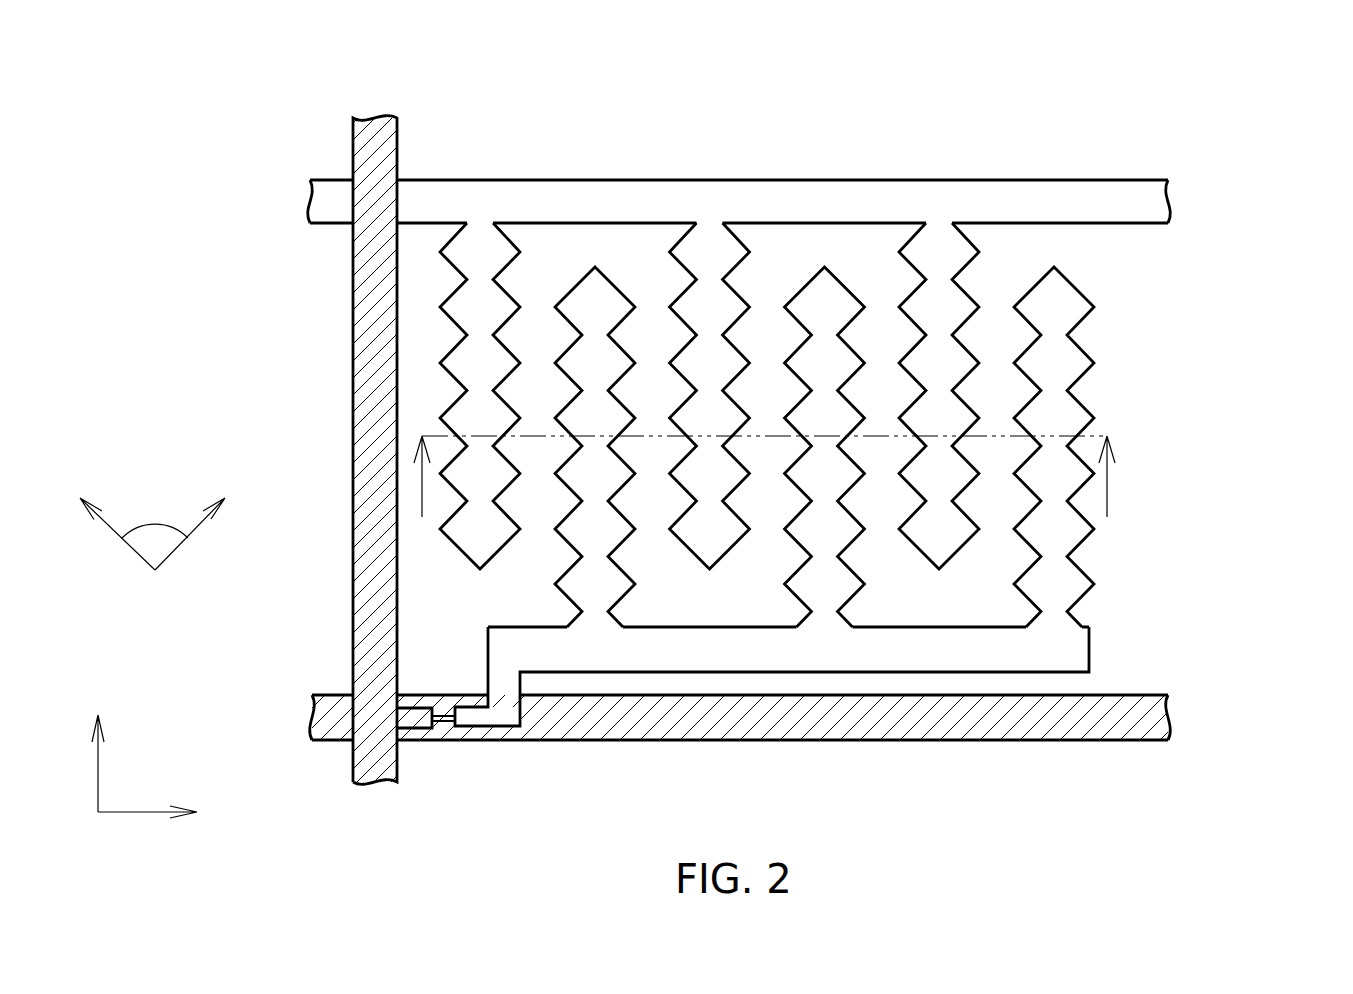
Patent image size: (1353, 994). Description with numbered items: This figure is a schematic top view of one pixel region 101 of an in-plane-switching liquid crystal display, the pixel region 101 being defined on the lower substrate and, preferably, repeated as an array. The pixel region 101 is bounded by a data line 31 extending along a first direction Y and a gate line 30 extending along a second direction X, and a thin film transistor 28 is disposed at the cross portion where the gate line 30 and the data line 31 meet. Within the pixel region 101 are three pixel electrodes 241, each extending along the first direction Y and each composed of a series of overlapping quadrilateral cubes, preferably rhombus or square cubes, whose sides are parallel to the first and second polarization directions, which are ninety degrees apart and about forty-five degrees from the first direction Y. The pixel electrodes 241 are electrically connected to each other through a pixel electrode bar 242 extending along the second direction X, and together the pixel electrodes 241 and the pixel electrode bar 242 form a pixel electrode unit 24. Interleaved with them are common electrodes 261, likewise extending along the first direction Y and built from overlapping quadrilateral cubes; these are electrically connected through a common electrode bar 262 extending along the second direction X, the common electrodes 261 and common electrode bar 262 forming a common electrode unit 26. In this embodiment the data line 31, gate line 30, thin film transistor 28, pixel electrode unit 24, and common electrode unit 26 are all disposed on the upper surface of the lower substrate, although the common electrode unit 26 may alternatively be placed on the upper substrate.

The pixel region 101 is at (1133, 98).
The common electrode unit 26 is at (240, 122).
The common electrode bar 262 is at (465, 187).
The common electrode 261 is at (462, 258).
The pixel electrode unit 24 is at (1290, 365).
The pixel electrode 241 is at (1073, 370).
The pixel electrode bar 242 is at (1073, 652).
The gate line 30 is at (1022, 728).
The thin film transistor 28 is at (454, 748).
The data line 31 is at (373, 635).